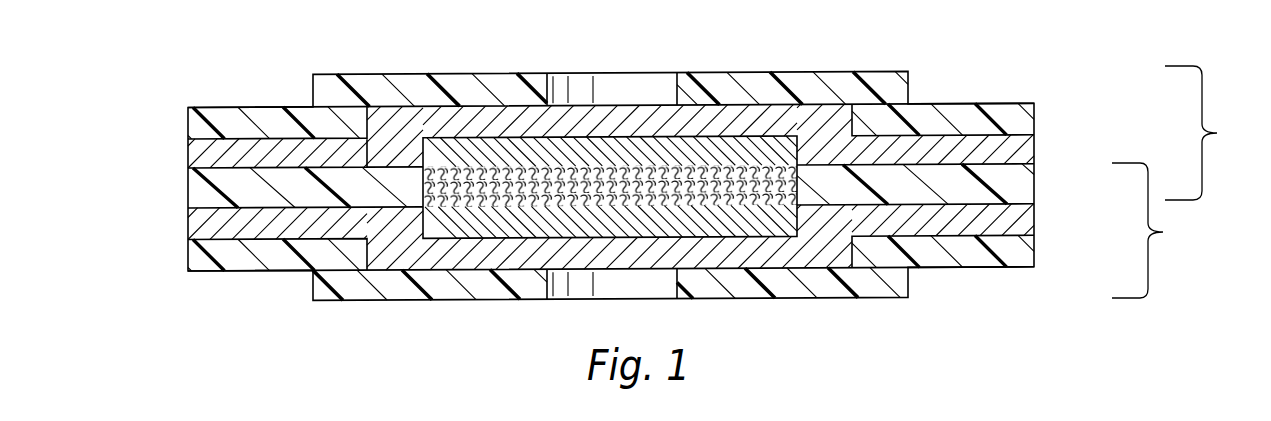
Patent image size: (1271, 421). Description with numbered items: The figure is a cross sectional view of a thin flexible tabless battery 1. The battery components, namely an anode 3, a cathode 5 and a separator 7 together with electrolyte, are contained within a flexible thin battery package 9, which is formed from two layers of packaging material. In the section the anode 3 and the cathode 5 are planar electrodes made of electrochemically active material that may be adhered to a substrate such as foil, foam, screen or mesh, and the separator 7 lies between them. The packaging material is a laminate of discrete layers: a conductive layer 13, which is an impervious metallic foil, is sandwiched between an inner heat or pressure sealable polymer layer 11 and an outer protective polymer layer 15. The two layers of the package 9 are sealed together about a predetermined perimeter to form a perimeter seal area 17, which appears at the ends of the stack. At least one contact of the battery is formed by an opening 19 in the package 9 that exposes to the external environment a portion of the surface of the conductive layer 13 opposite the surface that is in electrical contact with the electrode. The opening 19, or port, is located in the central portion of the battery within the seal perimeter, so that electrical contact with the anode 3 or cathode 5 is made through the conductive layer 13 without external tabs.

The thin flexible tabless battery 1 is at (147, 121).
The anode 3 is at (607, 150).
The cathode 5 is at (638, 222).
The separator 7 is at (705, 190).
The flexible thin battery package 9 is at (1172, 182).
The inner heat or pressure sealable polymer layer 11 is at (1037, 183).
The conductive layer 13 is at (1037, 147).
The outer protective polymer layer 15 is at (1037, 117).
The perimeter seal area 17 is at (255, 107).
The opening 19 is at (550, 92).